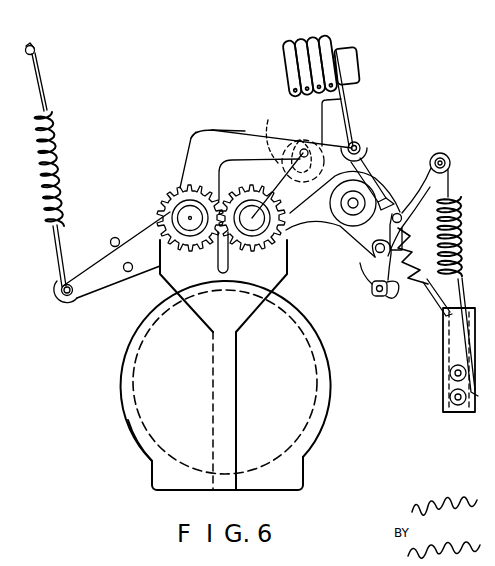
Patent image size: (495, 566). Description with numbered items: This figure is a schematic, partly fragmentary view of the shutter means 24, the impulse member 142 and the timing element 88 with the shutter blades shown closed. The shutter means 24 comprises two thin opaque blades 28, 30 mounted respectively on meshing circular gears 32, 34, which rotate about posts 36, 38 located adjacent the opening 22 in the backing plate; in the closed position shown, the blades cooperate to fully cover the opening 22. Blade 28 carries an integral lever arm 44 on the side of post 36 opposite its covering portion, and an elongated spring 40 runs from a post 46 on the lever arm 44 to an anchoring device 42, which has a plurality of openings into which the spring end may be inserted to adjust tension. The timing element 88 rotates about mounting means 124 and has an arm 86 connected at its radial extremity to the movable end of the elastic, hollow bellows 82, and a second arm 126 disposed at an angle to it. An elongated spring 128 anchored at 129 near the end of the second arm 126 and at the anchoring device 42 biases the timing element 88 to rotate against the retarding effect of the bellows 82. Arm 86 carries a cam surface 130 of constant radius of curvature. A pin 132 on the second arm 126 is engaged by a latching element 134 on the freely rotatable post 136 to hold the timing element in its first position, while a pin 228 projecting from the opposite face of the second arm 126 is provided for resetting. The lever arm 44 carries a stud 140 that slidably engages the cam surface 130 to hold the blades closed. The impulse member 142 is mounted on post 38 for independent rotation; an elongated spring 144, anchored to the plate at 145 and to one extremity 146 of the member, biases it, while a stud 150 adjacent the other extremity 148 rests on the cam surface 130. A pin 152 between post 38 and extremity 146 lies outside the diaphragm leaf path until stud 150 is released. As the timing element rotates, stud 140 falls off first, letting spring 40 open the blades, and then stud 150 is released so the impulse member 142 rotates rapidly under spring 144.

The anchor point of spring 145 is at (36, 47).
The elongated spring 144 is at (58, 162).
The extremity of impulse member 146 is at (92, 265).
The engagement portion or pin 152 is at (126, 272).
The circular gear 32 is at (284, 262).
The opening 22 is at (160, 453).
The opaque blade 30 is at (322, 412).
The opaque blade 28 is at (133, 422).
The shutter means 24 is at (150, 368).
The circular gear 34 is at (170, 197).
The post 38 is at (186, 217).
The post 36 is at (252, 226).
The cam follower portion or stud 140 is at (236, 143).
The extremity of impulse member 148 is at (236, 142).
The impulse member 142 is at (208, 148).
The cam surface 130 is at (309, 202).
The cam follower portion or stud 150 is at (296, 146).
The arm 86 is at (344, 105).
The bellows 82 is at (315, 40).
The post 46 is at (358, 146).
The mounting means 124 is at (359, 198).
The lever arm 44 is at (343, 214).
The timing element 88 is at (362, 235).
The pin 228 is at (376, 252).
The post 136 is at (372, 289).
The latching element 134 is at (395, 294).
The engageable portion or pin 132 is at (398, 213).
The anchor point of spring 129 is at (446, 157).
The second arm 126 is at (438, 190).
The elongated spring 128 is at (465, 243).
The elongated spring 40 is at (432, 297).
The anchoring device 42 is at (441, 369).